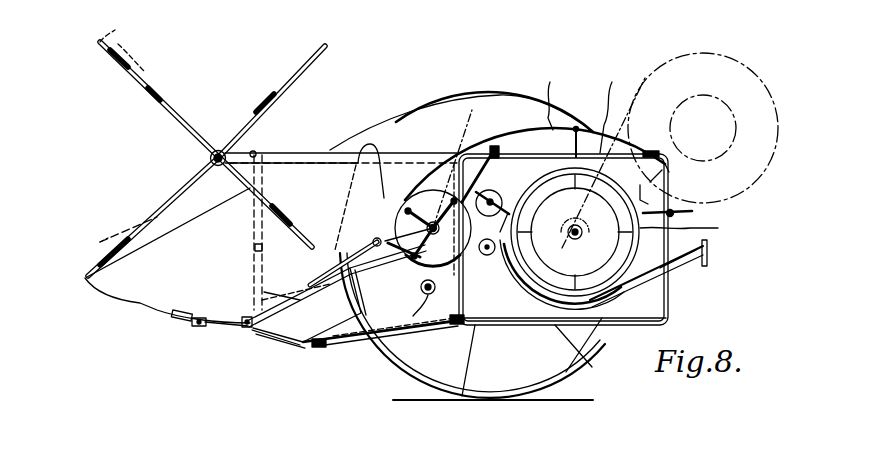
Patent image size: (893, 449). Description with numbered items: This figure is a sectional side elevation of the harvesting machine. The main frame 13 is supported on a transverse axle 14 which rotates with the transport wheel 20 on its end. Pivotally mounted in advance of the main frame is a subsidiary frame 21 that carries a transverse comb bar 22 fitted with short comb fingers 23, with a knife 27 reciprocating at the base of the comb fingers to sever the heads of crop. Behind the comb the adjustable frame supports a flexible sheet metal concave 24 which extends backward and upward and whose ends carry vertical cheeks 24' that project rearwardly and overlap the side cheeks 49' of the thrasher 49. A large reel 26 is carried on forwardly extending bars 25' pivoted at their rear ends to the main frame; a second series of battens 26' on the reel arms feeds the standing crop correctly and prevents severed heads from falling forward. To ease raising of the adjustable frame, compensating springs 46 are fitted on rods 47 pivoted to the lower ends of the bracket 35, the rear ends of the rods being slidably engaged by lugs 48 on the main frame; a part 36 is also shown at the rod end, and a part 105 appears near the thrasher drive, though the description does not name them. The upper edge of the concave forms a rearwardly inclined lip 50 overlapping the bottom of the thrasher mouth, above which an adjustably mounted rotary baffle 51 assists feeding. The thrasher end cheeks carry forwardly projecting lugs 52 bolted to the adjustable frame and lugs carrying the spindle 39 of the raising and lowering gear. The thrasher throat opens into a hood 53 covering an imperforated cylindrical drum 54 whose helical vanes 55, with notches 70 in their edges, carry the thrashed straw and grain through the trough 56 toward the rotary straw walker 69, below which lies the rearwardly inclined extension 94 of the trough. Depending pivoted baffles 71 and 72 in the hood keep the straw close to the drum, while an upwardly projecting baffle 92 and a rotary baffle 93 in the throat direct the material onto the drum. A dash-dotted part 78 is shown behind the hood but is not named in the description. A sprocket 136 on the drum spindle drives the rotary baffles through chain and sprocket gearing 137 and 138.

The main frame 13 is at (508, 325).
The transverse axle 14 is at (487, 255).
The transport wheel 20 is at (560, 379).
The subsidiary frame 21 is at (254, 331).
The transverse comb bar 22 is at (196, 328).
The comb fingers 23 is at (167, 267).
The flexible sheet metal concave 24 is at (226, 304).
The vertical cheeks 24' is at (260, 274).
The forwardly extending bars 25' is at (342, 139).
The reel 26 is at (206, 144).
The second series of battens 26' is at (206, 161).
The knife 27 is at (183, 311).
The bracket 35 is at (292, 349).
The rod end 36 is at (354, 346).
The spindle of the raising and lowering gear 39 is at (415, 310).
The compensating springs 46 is at (320, 348).
The rods 47 is at (365, 350).
The lugs 48 is at (462, 327).
The thrasher 49 is at (431, 228).
The side cheeks 49' is at (461, 161).
The rearwardly inclined lip 50 is at (367, 266).
The rotary baffle 51 is at (374, 197).
The forwardly projecting lugs 52 is at (421, 283).
The hood 53 is at (545, 97).
The cylindrical drum 54 is at (578, 187).
The helical vanes 55 is at (688, 230).
The trough 56 is at (528, 296).
The rotary straw walker 69 is at (694, 211).
The notches 70 is at (655, 198).
The depending pivoted baffles 71 is at (609, 107).
The depending pivoted baffles 72 is at (666, 177).
The disc 78 is at (768, 180).
The upwardly projecting baffle 92 is at (512, 192).
The rotary baffle 93 is at (481, 176).
The rearwardly inclined extension 94 is at (698, 260).
The crank 105 is at (358, 248).
The sprocket 136 is at (433, 228).
The chain and sprocket gearing 137 is at (494, 112).
The chain and sprocket gearing 138 is at (510, 157).